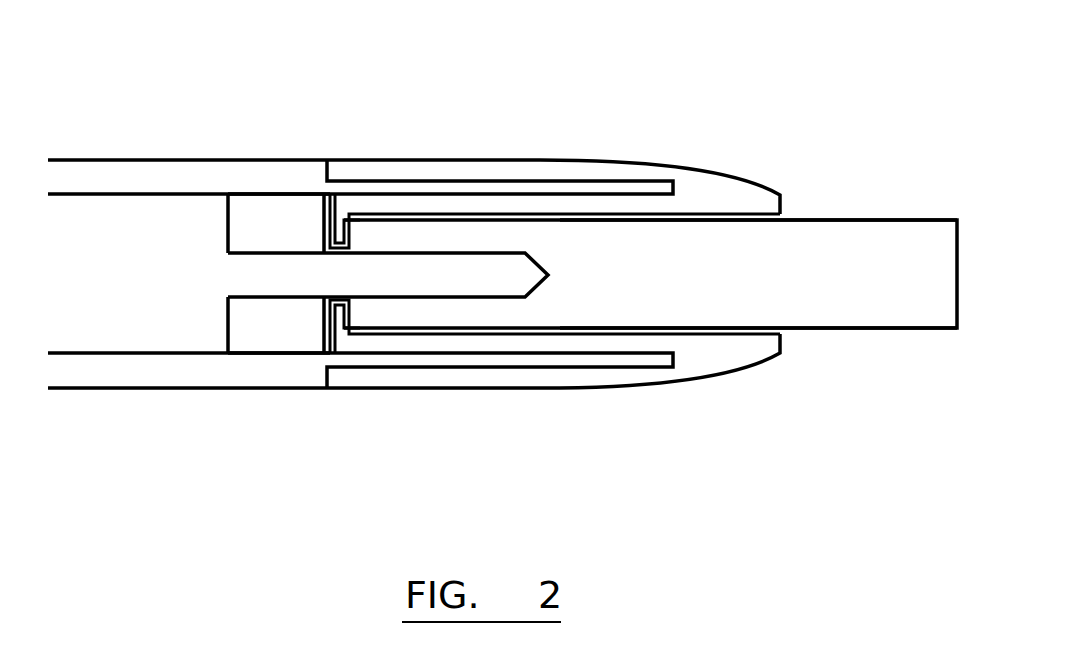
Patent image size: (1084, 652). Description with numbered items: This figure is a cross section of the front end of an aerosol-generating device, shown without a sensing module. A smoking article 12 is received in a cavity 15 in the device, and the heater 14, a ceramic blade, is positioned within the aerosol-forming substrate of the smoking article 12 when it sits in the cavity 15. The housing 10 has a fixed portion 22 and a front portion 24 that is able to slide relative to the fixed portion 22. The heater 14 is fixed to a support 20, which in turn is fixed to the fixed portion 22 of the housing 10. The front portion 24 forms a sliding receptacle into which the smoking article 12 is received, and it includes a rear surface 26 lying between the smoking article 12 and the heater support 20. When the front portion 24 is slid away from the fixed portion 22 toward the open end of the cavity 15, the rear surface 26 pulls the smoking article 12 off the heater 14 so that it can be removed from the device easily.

The housing 10 is at (194, 160).
The smoking article 12 is at (898, 220).
The heater 14 is at (445, 273).
The cavity 15 is at (585, 272).
The support 20 is at (273, 325).
The fixed portion 22 is at (272, 180).
The front portion 24 is at (713, 198).
The rear surface 26 is at (338, 233).